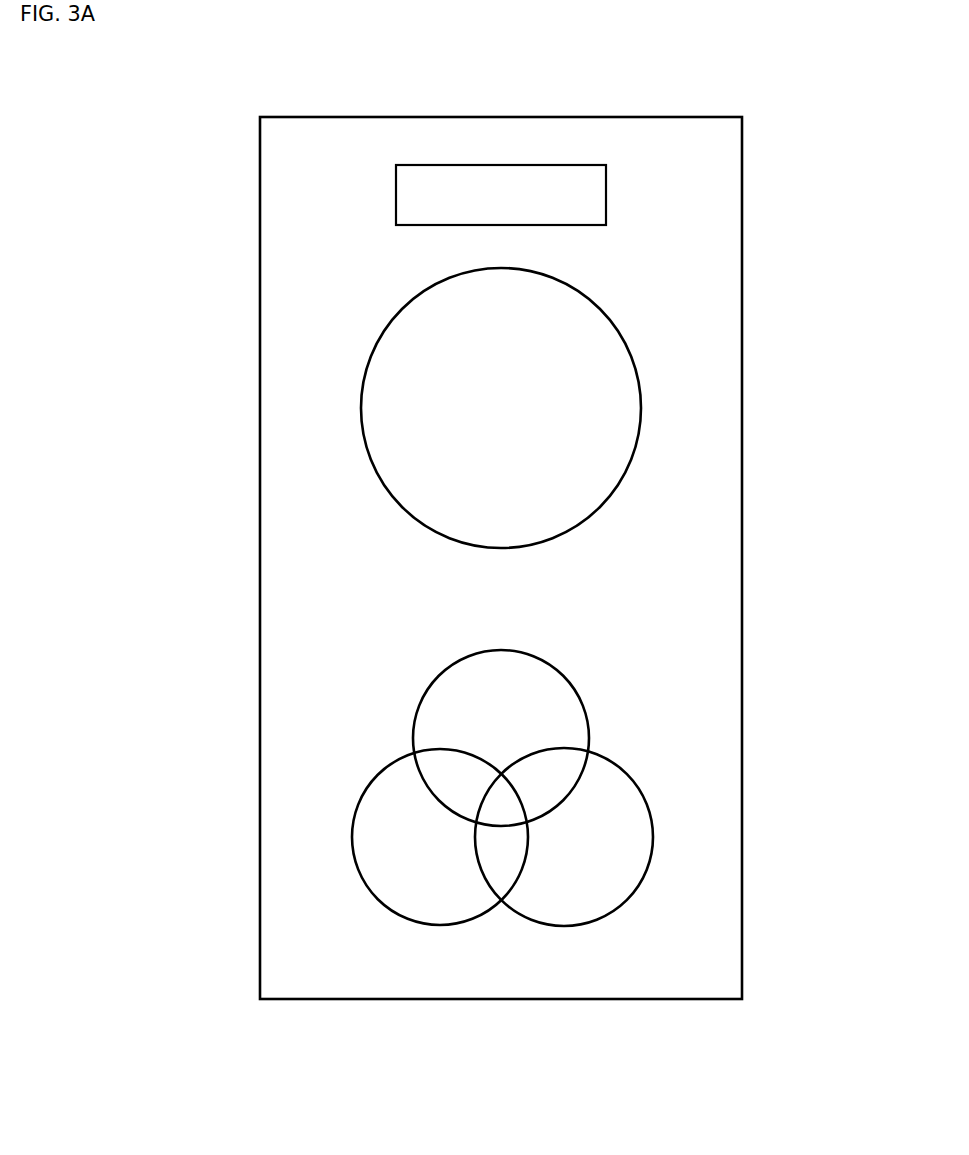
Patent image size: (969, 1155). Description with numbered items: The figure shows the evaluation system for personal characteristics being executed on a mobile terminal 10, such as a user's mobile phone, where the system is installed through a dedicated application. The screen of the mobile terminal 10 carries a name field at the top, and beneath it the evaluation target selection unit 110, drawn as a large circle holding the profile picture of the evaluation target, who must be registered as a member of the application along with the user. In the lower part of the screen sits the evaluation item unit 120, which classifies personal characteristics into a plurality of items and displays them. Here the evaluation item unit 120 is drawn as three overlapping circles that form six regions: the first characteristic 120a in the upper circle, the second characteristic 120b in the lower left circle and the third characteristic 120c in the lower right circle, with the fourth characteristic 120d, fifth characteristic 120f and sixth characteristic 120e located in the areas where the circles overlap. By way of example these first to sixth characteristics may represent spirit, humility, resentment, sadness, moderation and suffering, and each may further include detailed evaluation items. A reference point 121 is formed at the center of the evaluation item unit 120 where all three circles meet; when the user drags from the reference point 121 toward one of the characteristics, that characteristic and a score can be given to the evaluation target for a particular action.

The mobile terminal 10 is at (742, 188).
The evaluation target selection unit 110 is at (641, 408).
The evaluation item unit 120 is at (495, 783).
The first characteristic 120a is at (435, 710).
The second characteristic 120b is at (373, 803).
The third characteristic 120c is at (630, 862).
The fourth characteristic 120d is at (428, 760).
The sixth characteristic 120e is at (502, 882).
The fifth characteristic 120f is at (575, 758).
The reference point 121 is at (503, 813).